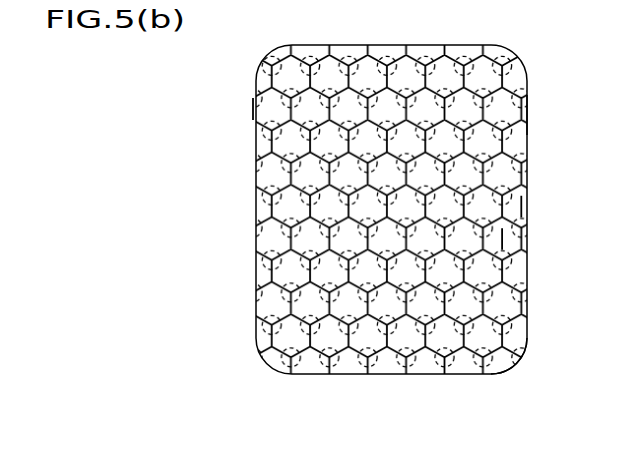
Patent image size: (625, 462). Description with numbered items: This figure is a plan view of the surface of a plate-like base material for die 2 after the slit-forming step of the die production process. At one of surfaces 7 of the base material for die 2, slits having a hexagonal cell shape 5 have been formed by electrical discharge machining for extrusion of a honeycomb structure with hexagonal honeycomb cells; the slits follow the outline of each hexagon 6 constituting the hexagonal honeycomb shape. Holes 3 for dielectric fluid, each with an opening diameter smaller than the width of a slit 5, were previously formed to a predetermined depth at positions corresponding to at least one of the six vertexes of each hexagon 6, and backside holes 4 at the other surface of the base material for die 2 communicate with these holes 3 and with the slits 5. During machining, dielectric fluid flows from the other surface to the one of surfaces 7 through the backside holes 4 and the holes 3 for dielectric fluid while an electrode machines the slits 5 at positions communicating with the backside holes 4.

The base material for die 2 is at (502, 66).
The hole for dielectric fluid 3 is at (527, 114).
The backside hole 4 is at (524, 224).
The slit having a hexagonal cell shape 5 is at (387, 57).
The hexagon 6 is at (310, 63).
The one of surfaces 7 is at (517, 366).